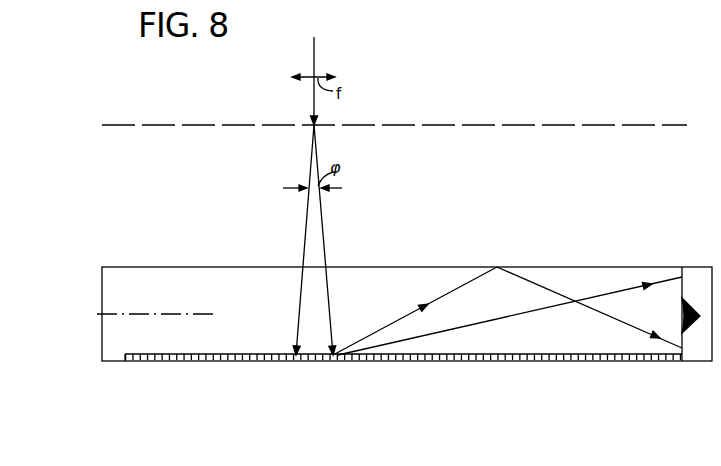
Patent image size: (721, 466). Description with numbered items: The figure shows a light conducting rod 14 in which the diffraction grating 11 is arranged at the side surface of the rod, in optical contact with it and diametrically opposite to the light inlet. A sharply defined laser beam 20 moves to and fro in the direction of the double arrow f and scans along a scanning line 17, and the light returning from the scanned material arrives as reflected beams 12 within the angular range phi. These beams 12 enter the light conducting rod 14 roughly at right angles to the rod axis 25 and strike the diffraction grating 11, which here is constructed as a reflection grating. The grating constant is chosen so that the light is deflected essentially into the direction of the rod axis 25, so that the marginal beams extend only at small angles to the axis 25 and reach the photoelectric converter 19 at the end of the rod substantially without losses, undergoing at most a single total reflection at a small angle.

The laser beam 20 is at (313, 58).
The scanning line 17 is at (515, 125).
The reflected beams 12 is at (302, 232).
The light conducting rod 14 is at (148, 278).
The rod axis 25 is at (218, 314).
The diffraction grating 11 is at (443, 361).
The photoelectric converter 19 is at (698, 353).